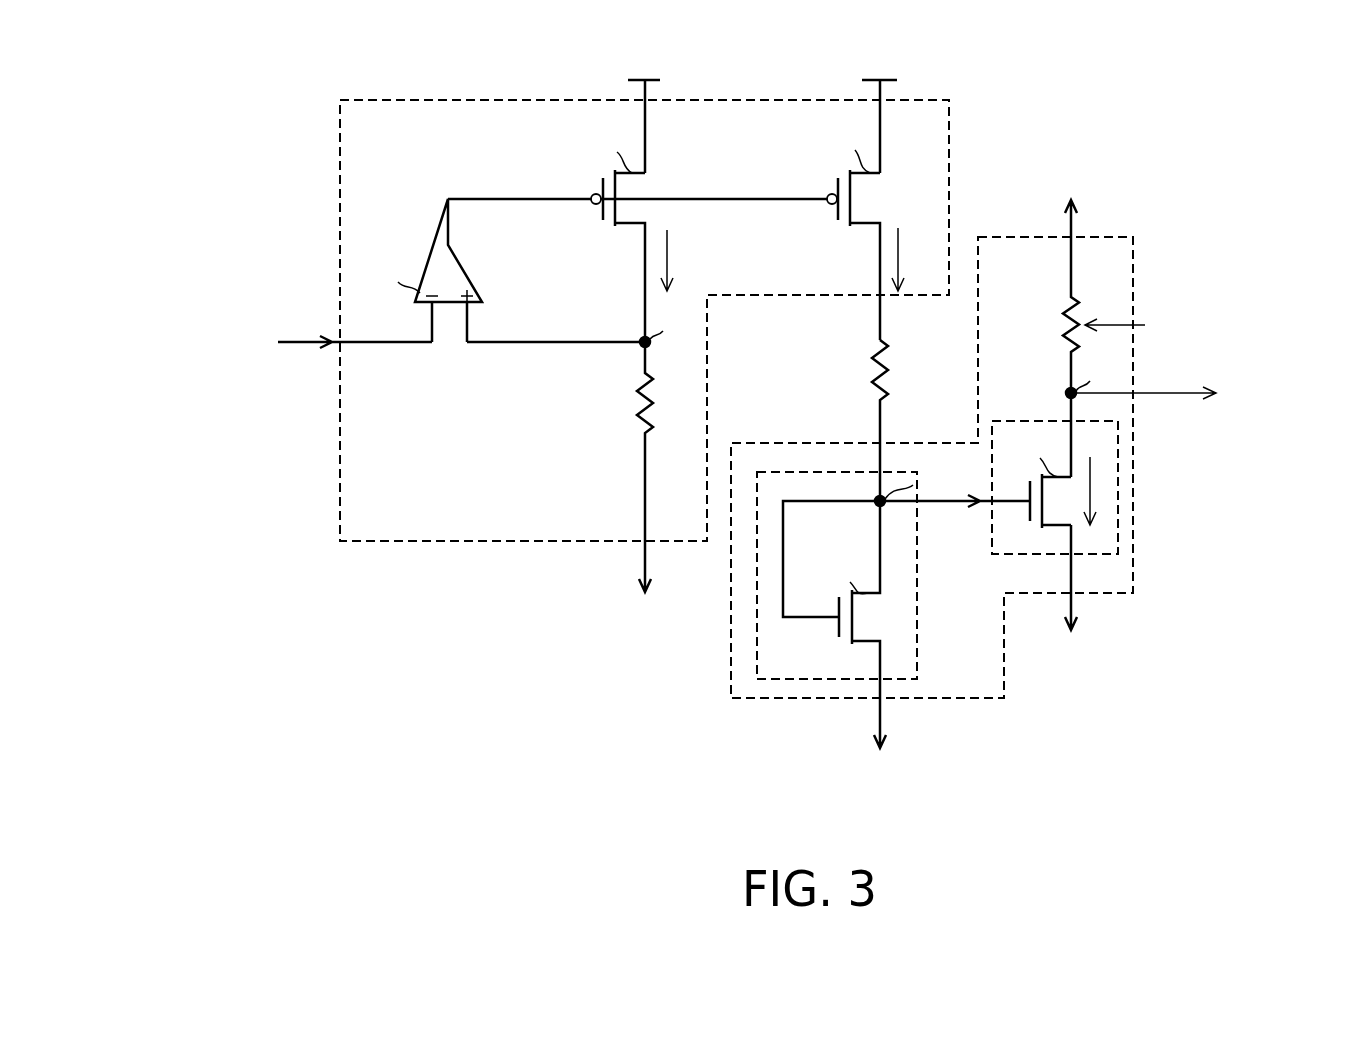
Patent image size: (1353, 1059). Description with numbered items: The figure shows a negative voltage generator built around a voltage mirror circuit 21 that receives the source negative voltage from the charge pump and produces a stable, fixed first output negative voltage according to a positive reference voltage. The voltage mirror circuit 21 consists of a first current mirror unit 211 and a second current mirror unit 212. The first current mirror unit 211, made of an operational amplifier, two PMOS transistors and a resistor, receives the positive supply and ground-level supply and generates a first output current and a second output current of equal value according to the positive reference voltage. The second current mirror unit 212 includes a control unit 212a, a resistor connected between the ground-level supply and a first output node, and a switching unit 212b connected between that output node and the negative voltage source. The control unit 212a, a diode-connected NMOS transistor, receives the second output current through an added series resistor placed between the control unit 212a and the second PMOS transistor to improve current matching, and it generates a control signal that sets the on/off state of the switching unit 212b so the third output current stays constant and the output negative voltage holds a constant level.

The voltage mirror circuit 21 is at (428, 702).
The first current mirror unit 211 is at (548, 97).
The second current mirror unit 212 is at (1137, 258).
The control unit 212a is at (917, 617).
The switching unit 212b is at (1120, 496).